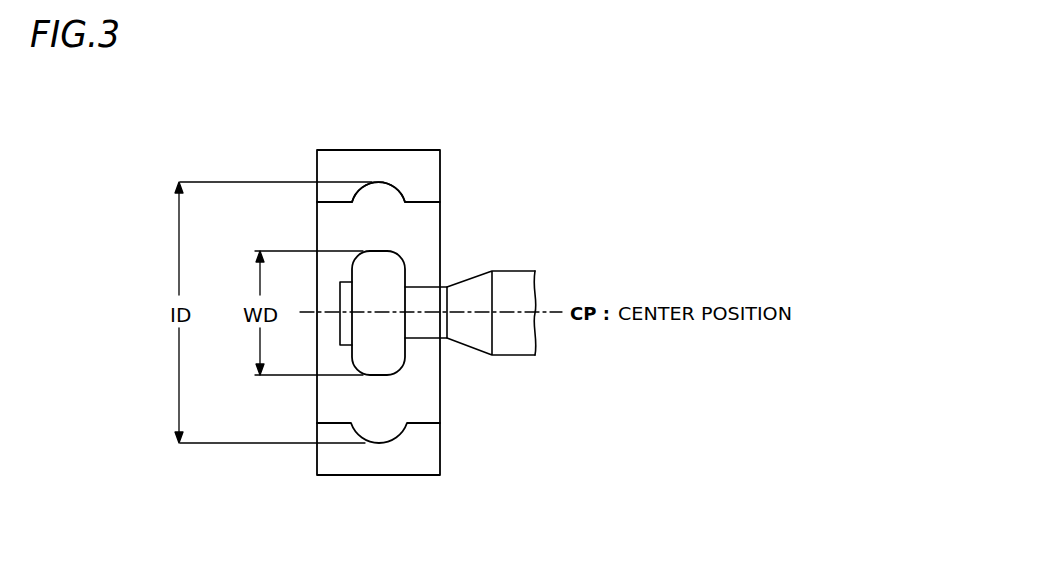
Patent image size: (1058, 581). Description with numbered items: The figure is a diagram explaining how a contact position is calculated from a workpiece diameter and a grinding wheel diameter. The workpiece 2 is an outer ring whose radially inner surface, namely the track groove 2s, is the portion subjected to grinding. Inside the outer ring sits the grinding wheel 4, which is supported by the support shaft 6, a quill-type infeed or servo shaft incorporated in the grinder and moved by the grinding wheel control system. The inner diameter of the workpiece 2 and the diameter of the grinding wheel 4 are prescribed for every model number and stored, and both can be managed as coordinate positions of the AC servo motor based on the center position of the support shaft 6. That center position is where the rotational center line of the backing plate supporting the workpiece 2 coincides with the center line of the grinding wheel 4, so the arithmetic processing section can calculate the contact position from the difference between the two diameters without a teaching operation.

The workpiece 2 is at (332, 150).
The track groove 2s is at (377, 183).
The grinding wheel 4 is at (400, 254).
The support shaft 6 is at (517, 270).